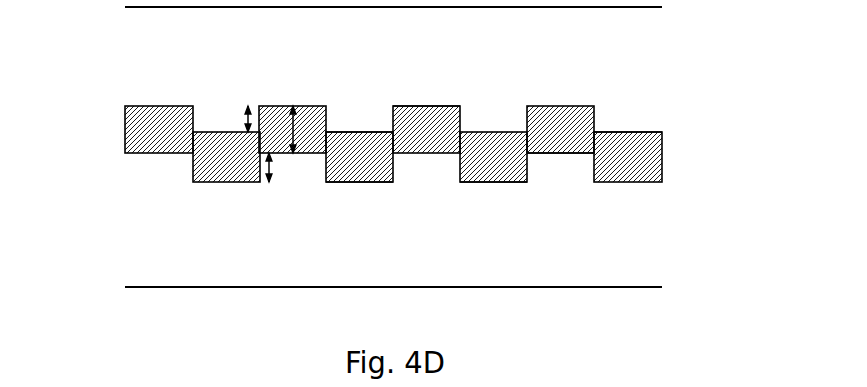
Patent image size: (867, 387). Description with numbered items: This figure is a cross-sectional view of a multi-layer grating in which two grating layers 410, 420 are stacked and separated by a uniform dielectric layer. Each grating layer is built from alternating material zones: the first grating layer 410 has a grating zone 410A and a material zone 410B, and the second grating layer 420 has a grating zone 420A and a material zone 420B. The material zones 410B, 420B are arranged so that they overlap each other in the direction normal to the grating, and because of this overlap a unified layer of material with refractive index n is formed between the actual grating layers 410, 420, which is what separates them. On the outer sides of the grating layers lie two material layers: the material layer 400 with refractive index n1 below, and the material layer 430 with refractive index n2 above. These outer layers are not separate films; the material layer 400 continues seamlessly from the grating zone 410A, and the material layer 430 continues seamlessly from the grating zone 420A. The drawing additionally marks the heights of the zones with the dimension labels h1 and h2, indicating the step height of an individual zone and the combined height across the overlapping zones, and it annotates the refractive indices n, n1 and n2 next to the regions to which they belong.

The material layer 430 is at (104, 7).
The grating layer 420 is at (371, 96).
The grating zone 420A is at (627, 115).
The material zone 420B is at (563, 112).
The grating layer 410 is at (404, 174).
The grating zone 410A is at (572, 172).
The material zone 410B is at (653, 163).
The material layer 400 is at (104, 186).
The step height h1 is at (292, 202).
The total height h2 is at (296, 122).
The refractive index n is at (447, 113).
The refractive index n1 is at (488, 226).
The refractive index n2 is at (364, 101).